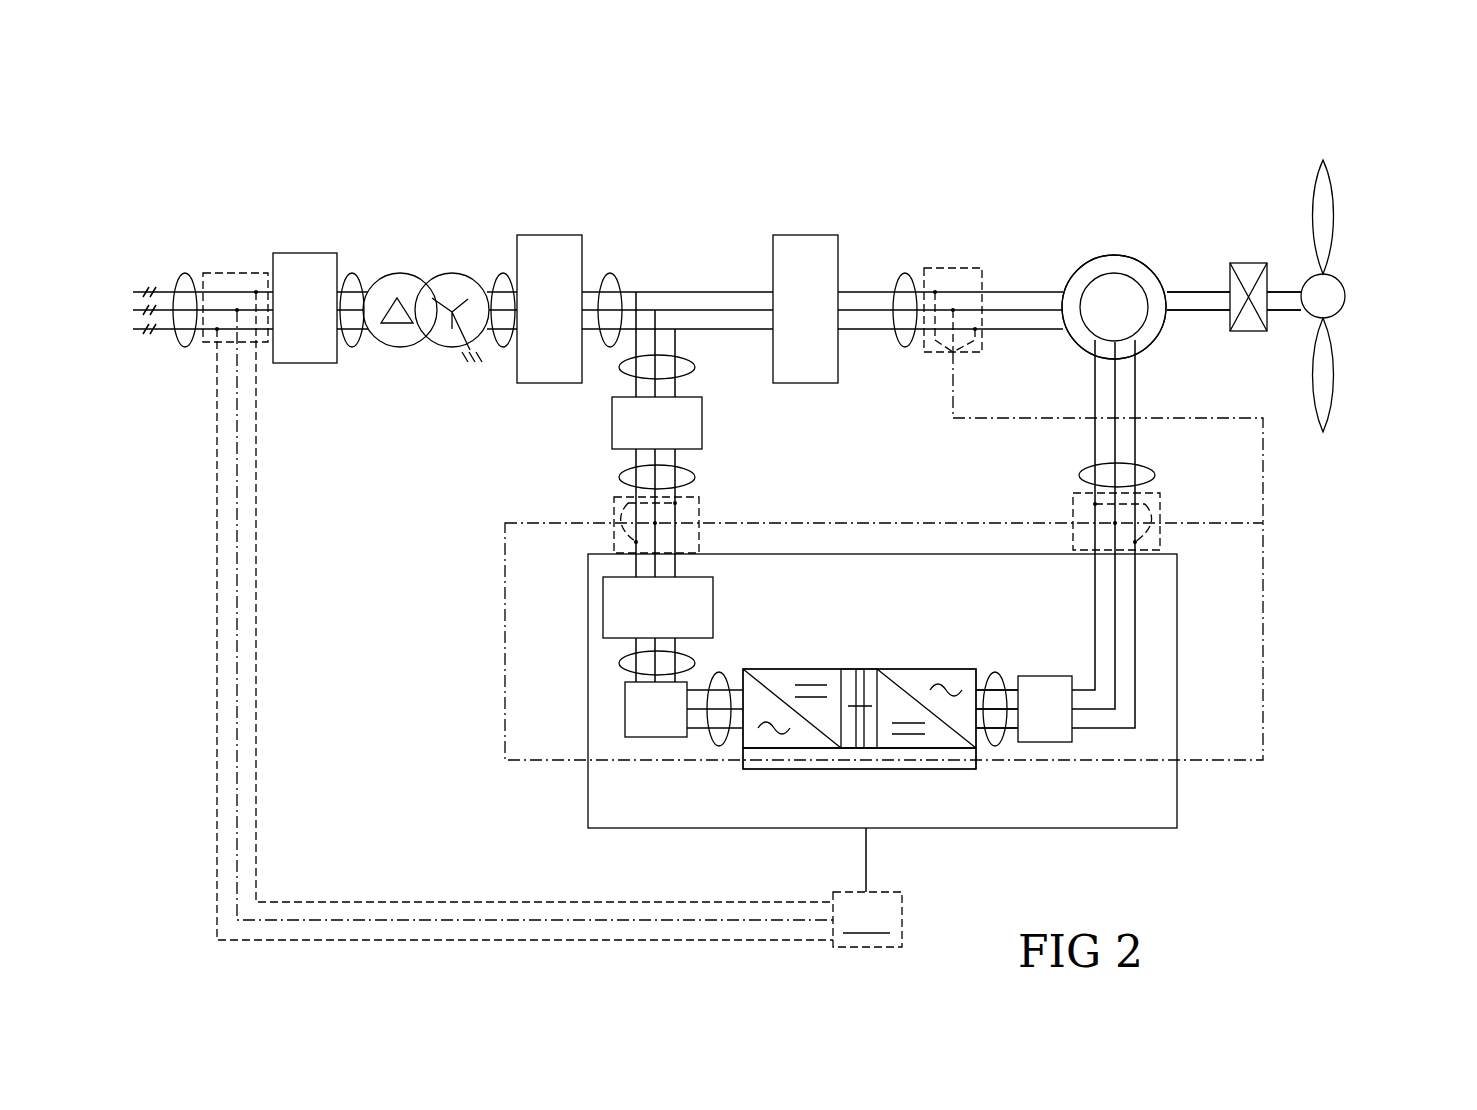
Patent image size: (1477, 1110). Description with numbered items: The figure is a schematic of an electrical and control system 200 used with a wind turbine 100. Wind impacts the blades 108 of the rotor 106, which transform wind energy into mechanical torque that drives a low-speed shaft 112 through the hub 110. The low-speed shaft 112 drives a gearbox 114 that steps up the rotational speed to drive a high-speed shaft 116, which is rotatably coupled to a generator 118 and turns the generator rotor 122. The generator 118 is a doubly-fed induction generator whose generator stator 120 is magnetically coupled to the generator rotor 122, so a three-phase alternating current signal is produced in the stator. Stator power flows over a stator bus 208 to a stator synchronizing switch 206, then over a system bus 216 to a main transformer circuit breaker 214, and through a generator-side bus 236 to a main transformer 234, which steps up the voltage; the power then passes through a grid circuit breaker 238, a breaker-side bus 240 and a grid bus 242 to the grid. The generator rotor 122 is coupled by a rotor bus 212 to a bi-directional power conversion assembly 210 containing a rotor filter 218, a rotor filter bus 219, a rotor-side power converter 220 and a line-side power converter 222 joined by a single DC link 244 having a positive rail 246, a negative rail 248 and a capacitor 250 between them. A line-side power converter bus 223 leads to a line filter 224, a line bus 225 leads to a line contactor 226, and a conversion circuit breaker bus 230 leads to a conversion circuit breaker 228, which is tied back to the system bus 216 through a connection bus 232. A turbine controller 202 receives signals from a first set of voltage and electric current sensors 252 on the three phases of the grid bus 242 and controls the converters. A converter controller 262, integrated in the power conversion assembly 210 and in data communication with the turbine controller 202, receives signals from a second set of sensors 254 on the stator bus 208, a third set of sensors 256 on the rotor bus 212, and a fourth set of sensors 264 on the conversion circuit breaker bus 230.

The wind turbine 100 is at (1310, 142).
The rotor 106 is at (1354, 276).
The blades 108 is at (1337, 228).
The hub 110 is at (1345, 297).
The low-speed shaft 112 is at (1285, 291).
The gearbox 114 is at (1248, 263).
The high-speed shaft 116 is at (1200, 290).
The generator 118 is at (1118, 216).
The generator stator 120 is at (1112, 262).
The generator rotor 122 is at (1106, 284).
The electrical and control system 200 is at (245, 123).
The turbine controller 202 is at (867, 919).
The stator synchronizing switch 206 is at (806, 235).
The stator bus 208 is at (905, 273).
The power conversion assembly 210 is at (1176, 688).
The rotor bus 212 is at (1156, 479).
The main transformer circuit breaker 214 is at (549, 235).
The system bus 216 is at (610, 273).
The rotor filter 218 is at (1040, 676).
The rotor filter bus 219 is at (995, 672).
The rotor-side power converter 220 is at (985, 746).
The line-side power converter 222 is at (743, 746).
The line-side power converter bus 223 is at (721, 672).
The line filter 224 is at (625, 710).
The line bus 225 is at (619, 664).
The line contactor 226 is at (603, 608).
The conversion circuit breaker 228 is at (702, 424).
The conversion circuit breaker bus 230 is at (695, 478).
The connection bus 232 is at (695, 368).
The main transformer 234 is at (448, 273).
The generator-side bus 236 is at (503, 273).
The grid circuit breaker 238 is at (306, 253).
The breaker-side bus 240 is at (352, 273).
The grid bus 242 is at (187, 273).
The DC link 244 is at (840, 617).
The positive rail 246 is at (872, 670).
The negative rail 248 is at (866, 749).
The capacitor 250 is at (857, 676).
The first set of voltage and electric current sensors 252 is at (208, 344).
The second set of voltage and electric current sensors 254 is at (967, 262).
The third set of voltage and electric current sensors 256 is at (1060, 522).
The converter controller 262 is at (930, 760).
The fourth set of voltage and electric current sensors 264 is at (700, 523).